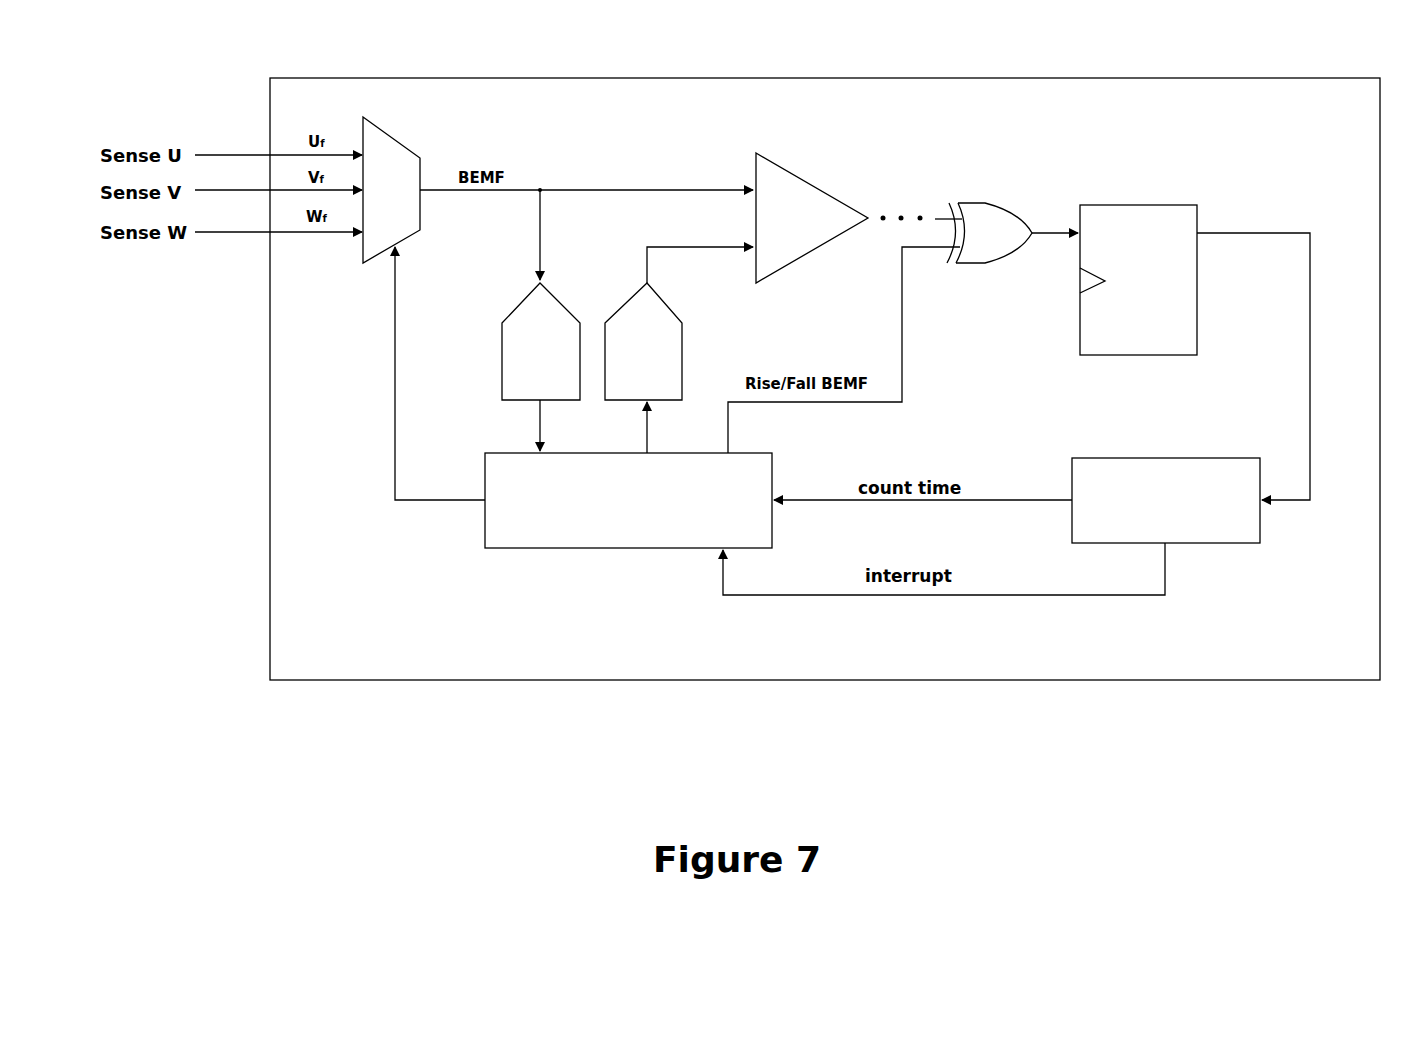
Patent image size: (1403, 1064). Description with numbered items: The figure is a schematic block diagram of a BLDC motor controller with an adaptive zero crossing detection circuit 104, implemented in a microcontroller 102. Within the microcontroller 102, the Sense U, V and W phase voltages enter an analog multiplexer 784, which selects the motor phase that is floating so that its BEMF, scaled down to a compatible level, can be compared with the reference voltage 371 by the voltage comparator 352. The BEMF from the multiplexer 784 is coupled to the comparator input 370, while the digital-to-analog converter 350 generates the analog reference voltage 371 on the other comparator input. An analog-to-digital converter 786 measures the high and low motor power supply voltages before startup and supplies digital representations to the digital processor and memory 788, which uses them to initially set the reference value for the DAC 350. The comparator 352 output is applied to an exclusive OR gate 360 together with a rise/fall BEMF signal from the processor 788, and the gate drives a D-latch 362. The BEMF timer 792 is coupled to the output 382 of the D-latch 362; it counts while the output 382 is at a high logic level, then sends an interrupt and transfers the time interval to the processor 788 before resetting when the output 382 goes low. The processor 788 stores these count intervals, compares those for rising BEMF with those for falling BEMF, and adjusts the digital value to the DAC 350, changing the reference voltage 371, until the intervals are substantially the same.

The microcontroller 102 is at (1140, 76).
The BEMF detection circuit 104 is at (953, 143).
The analog multiplexer 784 is at (395, 145).
The analog-to-digital converter 786 is at (503, 340).
The digital-to-analog converter 350 is at (682, 340).
The voltage comparator 352 is at (812, 188).
The comparator inverting input 370 is at (745, 188).
The reference voltage 371 is at (748, 245).
The exclusive OR gate 360 is at (995, 205).
The D-latch 362 is at (1080, 322).
The output of the D-latch 382 is at (1272, 235).
The digital processor and memory 788 is at (530, 549).
The BEMF timer 792 is at (1210, 456).